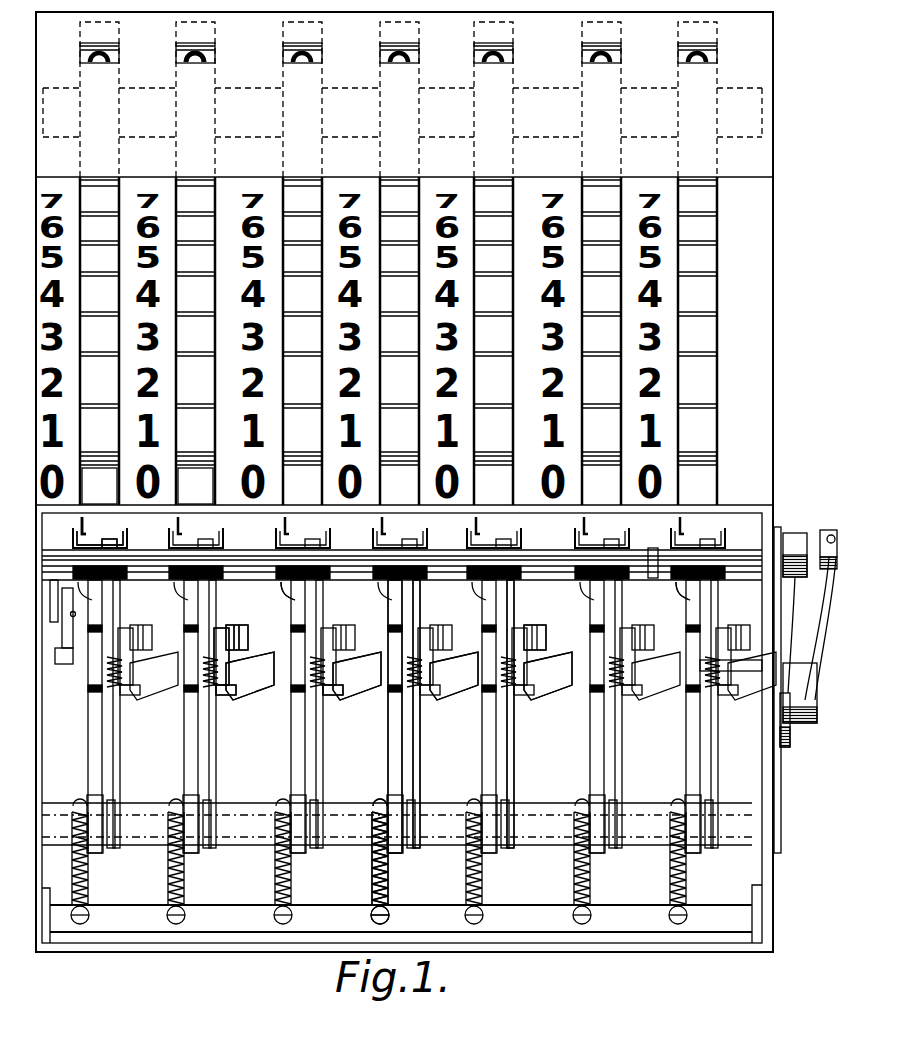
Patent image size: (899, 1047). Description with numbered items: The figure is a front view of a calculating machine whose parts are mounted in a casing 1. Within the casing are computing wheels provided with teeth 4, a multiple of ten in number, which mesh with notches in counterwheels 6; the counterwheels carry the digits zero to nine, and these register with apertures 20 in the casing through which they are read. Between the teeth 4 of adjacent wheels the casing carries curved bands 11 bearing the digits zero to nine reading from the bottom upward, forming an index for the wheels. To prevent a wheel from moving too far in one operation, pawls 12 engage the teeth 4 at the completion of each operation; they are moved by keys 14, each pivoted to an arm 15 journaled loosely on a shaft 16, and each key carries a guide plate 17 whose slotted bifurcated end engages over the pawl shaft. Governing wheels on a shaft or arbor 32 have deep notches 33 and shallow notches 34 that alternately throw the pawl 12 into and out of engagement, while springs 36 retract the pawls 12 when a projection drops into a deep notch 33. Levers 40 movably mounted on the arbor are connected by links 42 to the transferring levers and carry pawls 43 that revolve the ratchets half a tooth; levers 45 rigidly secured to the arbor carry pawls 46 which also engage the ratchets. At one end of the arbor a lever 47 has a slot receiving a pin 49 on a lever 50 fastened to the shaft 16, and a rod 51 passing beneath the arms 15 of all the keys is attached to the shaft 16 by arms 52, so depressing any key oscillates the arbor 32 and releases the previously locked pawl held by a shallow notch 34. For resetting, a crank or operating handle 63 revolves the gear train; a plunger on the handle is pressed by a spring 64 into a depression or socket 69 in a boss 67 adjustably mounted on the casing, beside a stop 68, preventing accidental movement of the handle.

The casing 1 is at (767, 733).
The teeth 4 is at (301, 195).
The counterwheels 6 is at (203, 138).
The curved bands 11 is at (229, 194).
The pawls 12 is at (494, 588).
The keys 14 is at (147, 486).
The arm 15 is at (118, 541).
The shaft 16 is at (233, 563).
The guide plates 17 is at (517, 600).
The apertures 20 is at (200, 58).
The shaft or arbor 32 is at (740, 672).
The deep notches 33 is at (600, 670).
The shallow notches 34 is at (600, 658).
The springs 36 is at (493, 677).
The levers 40 is at (235, 632).
The links 42 is at (248, 633).
The pawls 43 is at (222, 628).
The levers 45 is at (257, 673).
The pawls 46 is at (213, 690).
The lever 47 is at (68, 650).
The pin 49 is at (75, 614).
The lever 50 is at (54, 578).
The rod 51 is at (351, 568).
The arms 52 is at (655, 568).
The crank or operating handle 63 is at (800, 748).
The spring 64 is at (833, 535).
The boss 67 is at (778, 540).
The stop 68 is at (797, 578).
The depression or socket 69 is at (799, 534).